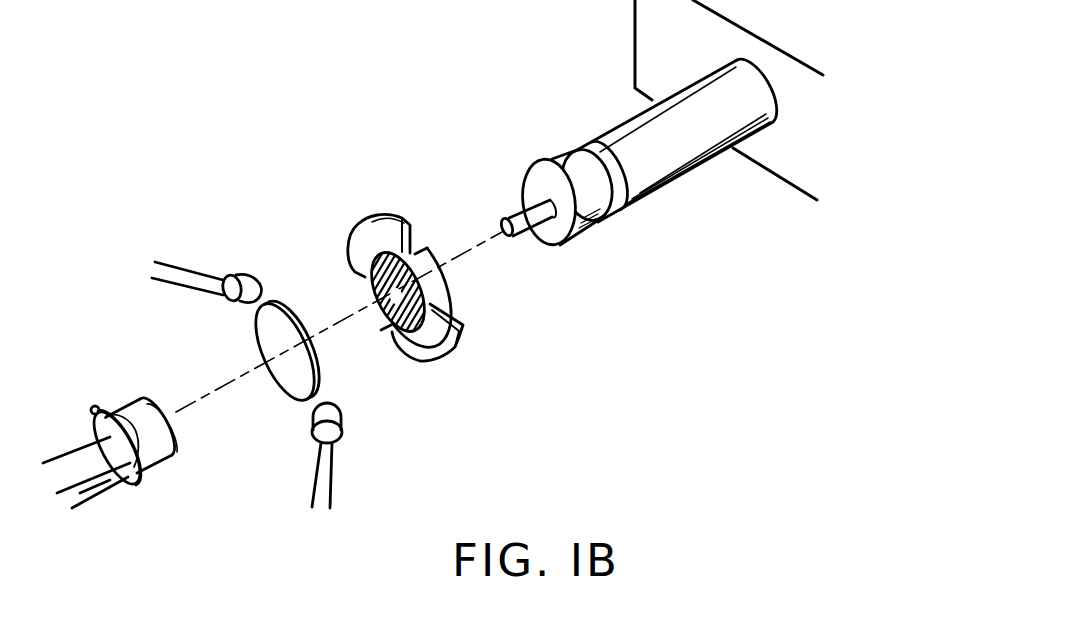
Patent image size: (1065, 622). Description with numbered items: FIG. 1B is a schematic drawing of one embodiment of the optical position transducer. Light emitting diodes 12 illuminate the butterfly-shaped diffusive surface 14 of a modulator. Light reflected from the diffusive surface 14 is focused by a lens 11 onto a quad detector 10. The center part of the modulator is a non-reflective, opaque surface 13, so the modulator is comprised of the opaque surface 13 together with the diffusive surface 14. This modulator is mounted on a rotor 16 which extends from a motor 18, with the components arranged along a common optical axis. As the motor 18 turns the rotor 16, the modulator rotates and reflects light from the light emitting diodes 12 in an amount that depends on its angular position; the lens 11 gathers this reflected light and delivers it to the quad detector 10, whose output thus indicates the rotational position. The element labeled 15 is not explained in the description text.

The quad detector 10 is at (143, 415).
The lens 11 is at (264, 338).
The light emitting diodes 12 is at (341, 433).
The non-reflective opaque surface 13 is at (372, 287).
The butterfly-shaped diffusive surface 14 is at (438, 344).
The motor shaft bearing 15 is at (598, 224).
The rotor 16 is at (637, 130).
The motor 18 is at (650, 20).